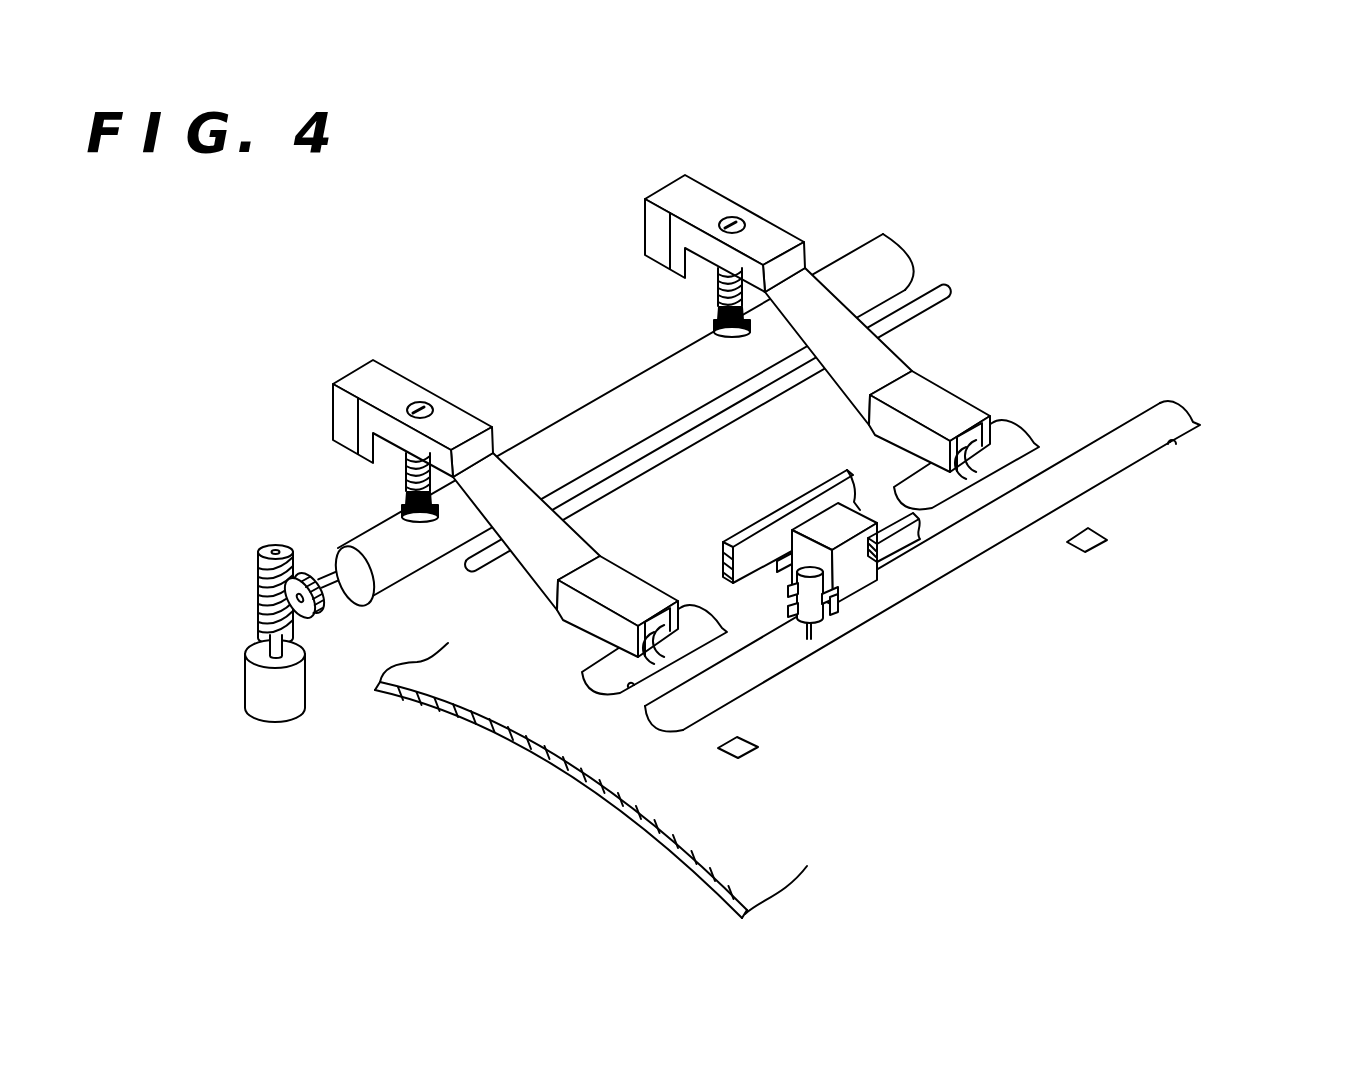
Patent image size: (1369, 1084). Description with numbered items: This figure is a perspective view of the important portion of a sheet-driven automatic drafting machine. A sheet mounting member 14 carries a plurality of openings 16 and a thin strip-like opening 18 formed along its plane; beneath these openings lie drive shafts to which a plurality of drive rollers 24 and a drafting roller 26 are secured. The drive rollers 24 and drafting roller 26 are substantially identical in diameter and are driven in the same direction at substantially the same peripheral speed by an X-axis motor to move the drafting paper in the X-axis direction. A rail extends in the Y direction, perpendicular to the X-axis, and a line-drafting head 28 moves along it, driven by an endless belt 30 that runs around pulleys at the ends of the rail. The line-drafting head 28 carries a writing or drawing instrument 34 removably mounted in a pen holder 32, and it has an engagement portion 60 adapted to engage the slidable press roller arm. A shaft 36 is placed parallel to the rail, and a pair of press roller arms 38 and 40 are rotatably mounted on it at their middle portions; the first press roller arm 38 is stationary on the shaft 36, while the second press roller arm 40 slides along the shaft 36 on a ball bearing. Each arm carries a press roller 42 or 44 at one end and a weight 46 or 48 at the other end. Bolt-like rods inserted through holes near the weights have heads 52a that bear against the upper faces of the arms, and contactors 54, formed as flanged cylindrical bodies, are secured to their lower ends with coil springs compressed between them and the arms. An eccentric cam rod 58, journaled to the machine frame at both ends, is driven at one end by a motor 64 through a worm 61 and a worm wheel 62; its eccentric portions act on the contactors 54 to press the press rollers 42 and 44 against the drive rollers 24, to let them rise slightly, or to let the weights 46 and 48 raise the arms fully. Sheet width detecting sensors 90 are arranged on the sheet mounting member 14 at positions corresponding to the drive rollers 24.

The sheet mounting member 14 is at (433, 698).
The openings 16 is at (1038, 442).
The strip-like opening 18 is at (1170, 444).
The drive rollers 24 is at (632, 684).
The drafting roller 26 is at (690, 712).
The line-drafting head 28 is at (862, 584).
The endless belt 30 is at (740, 572).
The pen holder 32 is at (826, 614).
The writing or drawing instrument 34 is at (800, 620).
The shaft 36 is at (650, 458).
The first press roller arm 38 is at (448, 413).
The second press roller arm 40 is at (763, 228).
The press roller 42 is at (630, 672).
The press roller 44 is at (958, 482).
The weight 46 is at (367, 373).
The weight 48 is at (677, 190).
The heads 52a is at (417, 402).
The contactors 54 is at (403, 510).
The eccentric cam rod 58 is at (561, 421).
The engagement portion 60 is at (778, 573).
The worm 61 is at (258, 582).
The worm wheel 62 is at (324, 620).
The motor 64 is at (255, 687).
The sheet width detecting sensors 90 is at (1107, 541).
The Y-axis direction Y is at (897, 542).